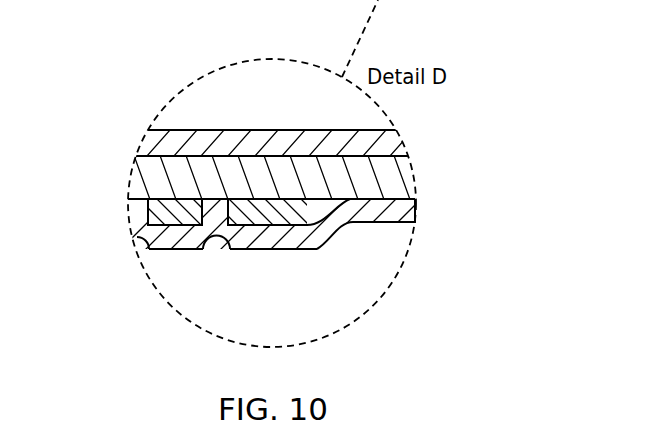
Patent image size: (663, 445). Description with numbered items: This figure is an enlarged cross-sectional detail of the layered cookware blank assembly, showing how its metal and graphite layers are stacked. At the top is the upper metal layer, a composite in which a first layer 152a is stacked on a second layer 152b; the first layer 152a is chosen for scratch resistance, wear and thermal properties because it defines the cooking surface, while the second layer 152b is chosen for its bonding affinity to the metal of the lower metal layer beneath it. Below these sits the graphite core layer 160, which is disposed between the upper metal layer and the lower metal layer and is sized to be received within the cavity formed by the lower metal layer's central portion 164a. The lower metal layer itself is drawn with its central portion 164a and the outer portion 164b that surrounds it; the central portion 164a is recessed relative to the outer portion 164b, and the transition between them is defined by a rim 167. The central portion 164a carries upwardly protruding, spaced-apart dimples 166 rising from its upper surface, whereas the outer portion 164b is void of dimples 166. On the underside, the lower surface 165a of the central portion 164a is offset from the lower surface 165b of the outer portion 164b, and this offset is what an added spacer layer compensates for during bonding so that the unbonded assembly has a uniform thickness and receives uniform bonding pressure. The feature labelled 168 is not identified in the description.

The first layer 152a is at (148, 143).
The second layer 152b is at (402, 162).
The graphite core layer 160 is at (350, 224).
The central portion 164a is at (166, 248).
The outer portion 164b is at (413, 212).
The lower surface of the central portion 165a is at (245, 219).
The lower surface of the outer portion 165b is at (402, 226).
The dimples 166 is at (218, 213).
The rim 167 is at (234, 250).
The spacer 168 is at (213, 252).